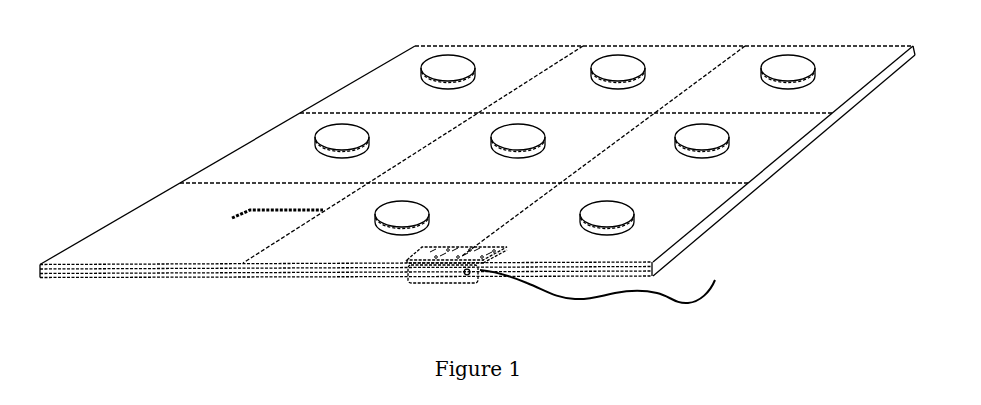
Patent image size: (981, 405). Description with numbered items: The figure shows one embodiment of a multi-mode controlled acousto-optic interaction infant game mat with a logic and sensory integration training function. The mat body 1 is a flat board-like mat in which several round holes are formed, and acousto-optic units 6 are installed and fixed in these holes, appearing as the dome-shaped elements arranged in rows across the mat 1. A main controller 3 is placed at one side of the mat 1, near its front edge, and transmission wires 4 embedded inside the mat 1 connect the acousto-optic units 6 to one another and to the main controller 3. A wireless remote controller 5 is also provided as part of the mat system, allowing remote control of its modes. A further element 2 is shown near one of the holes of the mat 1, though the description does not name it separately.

The mat body 1 is at (233, 162).
The peeled cover layer 2 is at (284, 209).
The main controller 3 is at (432, 282).
The transmission wires 4 is at (431, 217).
The wireless remote controller 5 is at (417, 250).
The acousto-optic units 6 is at (399, 208).